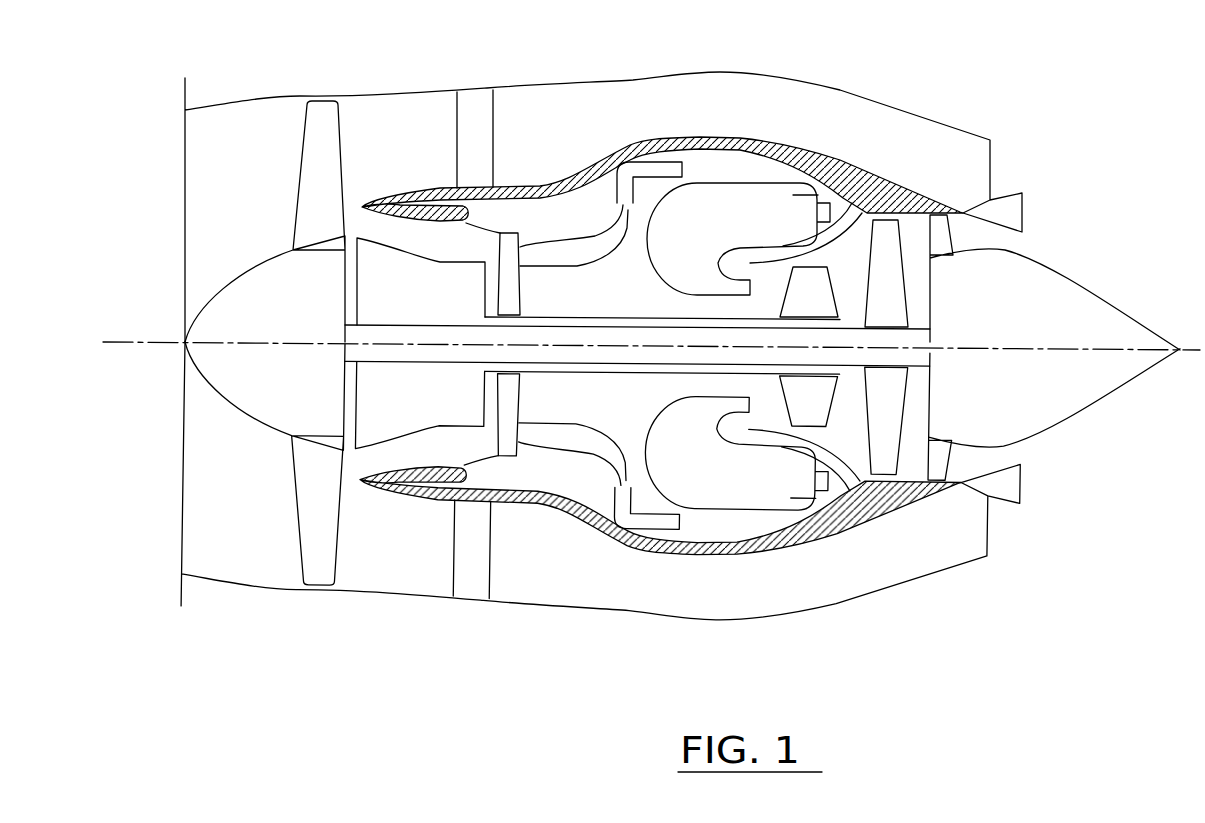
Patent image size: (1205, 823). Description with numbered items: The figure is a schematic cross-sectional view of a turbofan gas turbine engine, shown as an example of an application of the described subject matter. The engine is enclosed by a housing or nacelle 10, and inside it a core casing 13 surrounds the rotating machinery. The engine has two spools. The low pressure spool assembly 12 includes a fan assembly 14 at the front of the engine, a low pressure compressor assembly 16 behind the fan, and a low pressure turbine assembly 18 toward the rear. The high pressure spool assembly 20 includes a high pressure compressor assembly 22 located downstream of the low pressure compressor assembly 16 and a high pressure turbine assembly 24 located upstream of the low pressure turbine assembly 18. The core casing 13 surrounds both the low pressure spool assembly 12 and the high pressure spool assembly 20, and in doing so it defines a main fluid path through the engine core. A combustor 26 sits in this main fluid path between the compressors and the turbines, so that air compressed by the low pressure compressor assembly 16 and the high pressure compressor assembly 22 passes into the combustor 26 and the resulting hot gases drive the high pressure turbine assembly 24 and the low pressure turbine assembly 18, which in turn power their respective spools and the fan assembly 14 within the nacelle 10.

The housing or nacelle 10 is at (637, 78).
The low pressure spool assembly 12 is at (432, 323).
The core casing 13 is at (651, 139).
The fan assembly 14 is at (298, 155).
The low pressure compressor assembly 16 is at (375, 283).
The low pressure turbine assembly 18 is at (915, 240).
The high pressure spool assembly 20 is at (557, 313).
The high pressure compressor assembly 22 is at (544, 230).
The high pressure turbine assembly 24 is at (840, 163).
The combustor 26 is at (782, 200).